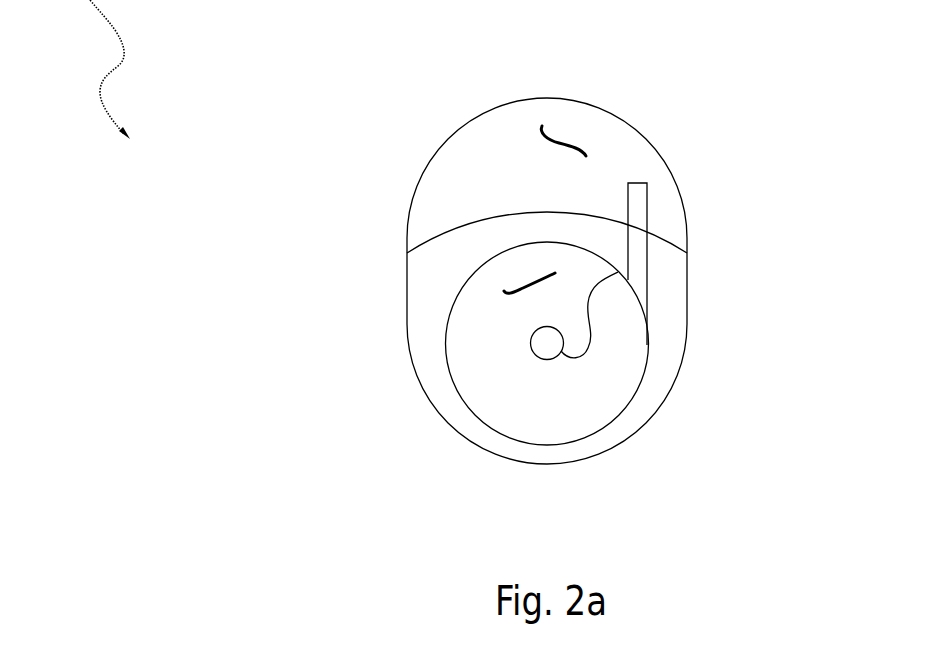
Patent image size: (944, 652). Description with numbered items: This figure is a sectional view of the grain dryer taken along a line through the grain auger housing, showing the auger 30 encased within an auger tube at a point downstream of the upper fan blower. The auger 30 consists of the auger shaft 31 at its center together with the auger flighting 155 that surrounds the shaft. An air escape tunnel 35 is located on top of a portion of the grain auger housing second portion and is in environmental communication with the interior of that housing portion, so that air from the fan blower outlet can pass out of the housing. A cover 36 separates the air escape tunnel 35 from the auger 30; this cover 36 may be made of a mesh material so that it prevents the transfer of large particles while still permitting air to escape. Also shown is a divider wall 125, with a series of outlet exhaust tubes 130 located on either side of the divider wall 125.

The auger 30 is at (525, 278).
The auger shaft 31 is at (547, 343).
The air escape tunnel 35 is at (565, 142).
The cover 36 is at (453, 222).
The divider wall 125 is at (608, 260).
The outlet exhaust tubes 130 is at (640, 183).
The auger flighting 155 is at (632, 360).